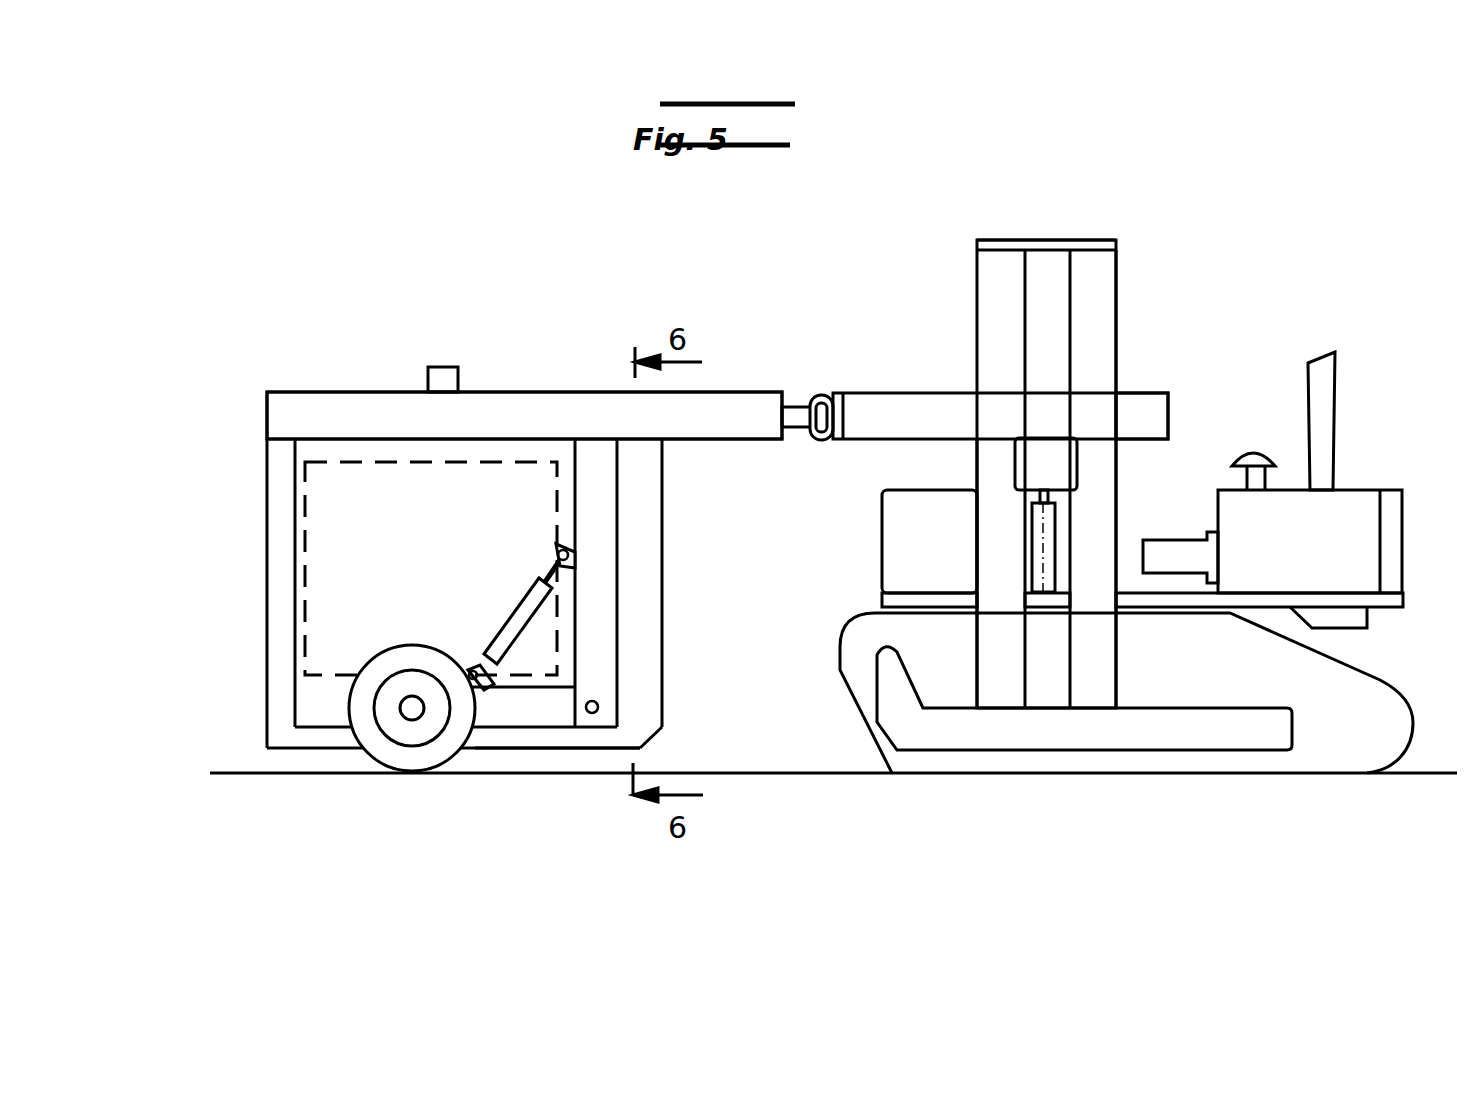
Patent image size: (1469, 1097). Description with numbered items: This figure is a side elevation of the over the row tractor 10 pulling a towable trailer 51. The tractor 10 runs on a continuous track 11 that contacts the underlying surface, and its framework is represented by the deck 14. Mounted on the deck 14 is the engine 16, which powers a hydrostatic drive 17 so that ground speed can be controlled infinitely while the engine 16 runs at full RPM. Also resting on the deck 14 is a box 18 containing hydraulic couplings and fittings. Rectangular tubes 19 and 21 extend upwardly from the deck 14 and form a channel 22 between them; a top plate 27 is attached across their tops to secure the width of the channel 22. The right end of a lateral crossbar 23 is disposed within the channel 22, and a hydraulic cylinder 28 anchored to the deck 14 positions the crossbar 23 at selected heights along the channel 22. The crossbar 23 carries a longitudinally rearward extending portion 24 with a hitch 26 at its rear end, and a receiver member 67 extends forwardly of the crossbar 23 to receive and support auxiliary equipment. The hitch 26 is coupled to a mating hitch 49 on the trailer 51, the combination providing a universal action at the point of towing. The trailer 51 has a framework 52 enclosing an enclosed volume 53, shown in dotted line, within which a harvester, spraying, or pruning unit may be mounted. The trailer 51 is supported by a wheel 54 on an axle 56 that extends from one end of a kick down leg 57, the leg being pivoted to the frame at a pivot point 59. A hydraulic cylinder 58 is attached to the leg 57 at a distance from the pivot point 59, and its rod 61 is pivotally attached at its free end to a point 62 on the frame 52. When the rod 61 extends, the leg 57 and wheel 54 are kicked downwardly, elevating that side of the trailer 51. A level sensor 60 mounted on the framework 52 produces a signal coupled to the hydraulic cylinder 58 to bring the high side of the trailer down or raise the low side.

The over the row tractor 10 is at (1262, 260).
The continuous track 11 is at (1380, 682).
The deck 14 is at (1383, 608).
The engine 16 is at (1353, 490).
The hydrostatic drive 17 is at (1155, 540).
The box 18 is at (882, 548).
The rectangular tube 19 is at (977, 282).
The rectangular tube 21 is at (1118, 318).
The channel 22 is at (1042, 284).
The lateral crossbar 23 is at (1043, 394).
The rearward extending portion 24 is at (888, 393).
The hitch 26 is at (822, 396).
The top plate 27 is at (1084, 242).
The hydraulic cylinder 28 is at (1038, 548).
The mating hitch 49 is at (805, 418).
The towable trailer 51 is at (432, 300).
The framework 52 is at (366, 392).
The enclosed volume 53 is at (428, 520).
The wheel 54 is at (380, 656).
The axle 56 is at (410, 716).
The kick down leg 57 is at (498, 750).
The hydraulic cylinder 58 is at (510, 612).
The pivot point 59 is at (598, 702).
The level sensor 60 is at (450, 368).
The rod 61 is at (548, 564).
The point 62 is at (560, 548).
The receiver member 67 is at (1168, 394).